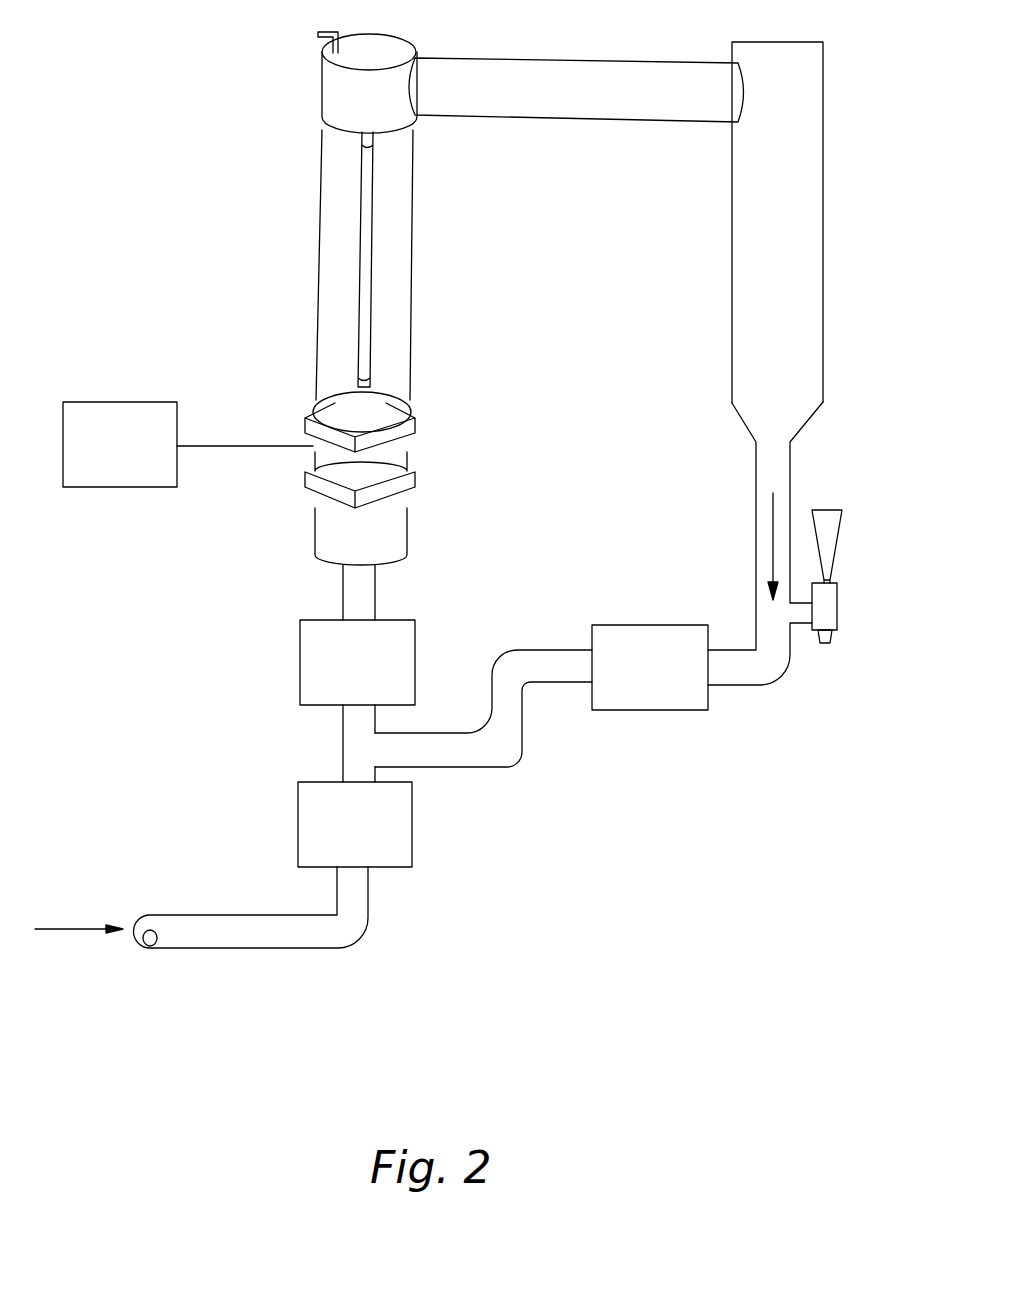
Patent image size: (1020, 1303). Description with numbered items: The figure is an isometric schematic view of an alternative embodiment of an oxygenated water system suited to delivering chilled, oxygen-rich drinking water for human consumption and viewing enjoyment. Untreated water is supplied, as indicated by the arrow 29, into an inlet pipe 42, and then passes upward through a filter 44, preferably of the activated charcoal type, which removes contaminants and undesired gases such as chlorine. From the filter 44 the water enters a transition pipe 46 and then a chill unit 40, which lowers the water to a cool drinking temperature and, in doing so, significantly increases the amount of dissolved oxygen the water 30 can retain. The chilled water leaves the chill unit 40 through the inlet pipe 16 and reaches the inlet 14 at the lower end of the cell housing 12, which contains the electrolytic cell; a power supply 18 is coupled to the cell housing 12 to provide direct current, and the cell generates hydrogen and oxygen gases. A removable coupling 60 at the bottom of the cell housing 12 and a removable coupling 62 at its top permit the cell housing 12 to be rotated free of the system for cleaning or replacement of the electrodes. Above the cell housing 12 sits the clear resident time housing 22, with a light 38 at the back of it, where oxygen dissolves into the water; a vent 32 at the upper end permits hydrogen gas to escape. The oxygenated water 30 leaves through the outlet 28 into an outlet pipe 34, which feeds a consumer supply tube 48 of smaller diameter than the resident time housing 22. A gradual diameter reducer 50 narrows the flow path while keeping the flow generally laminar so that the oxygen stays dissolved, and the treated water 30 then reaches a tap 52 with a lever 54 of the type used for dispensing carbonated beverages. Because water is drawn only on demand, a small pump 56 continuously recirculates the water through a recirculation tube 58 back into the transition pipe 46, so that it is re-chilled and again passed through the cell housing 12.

The cell housing 12 is at (408, 453).
The inlet 14 is at (408, 522).
The inlet pipe 16 is at (375, 595).
The power supply 18 is at (120, 402).
The resident time housing 22 is at (413, 241).
The outlet 28 is at (330, 90).
The arrow 29 is at (64, 930).
The water 30 is at (772, 530).
The vent 32 is at (336, 30).
The outlet pipe 34 is at (574, 60).
The light 38 is at (373, 295).
The chill unit 40 is at (300, 660).
The inlet pipe 42 is at (360, 945).
The filter 44 is at (298, 823).
The transition pipe 46 is at (342, 743).
The consumer supply tube 48 is at (823, 225).
The gradual diameter reducer 50 is at (743, 420).
The tap 52 is at (838, 607).
The lever 54 is at (840, 537).
The pump 56 is at (650, 625).
The recirculation tube 58 is at (512, 760).
The removable coupling 60 is at (305, 488).
The removable coupling 62 is at (305, 430).